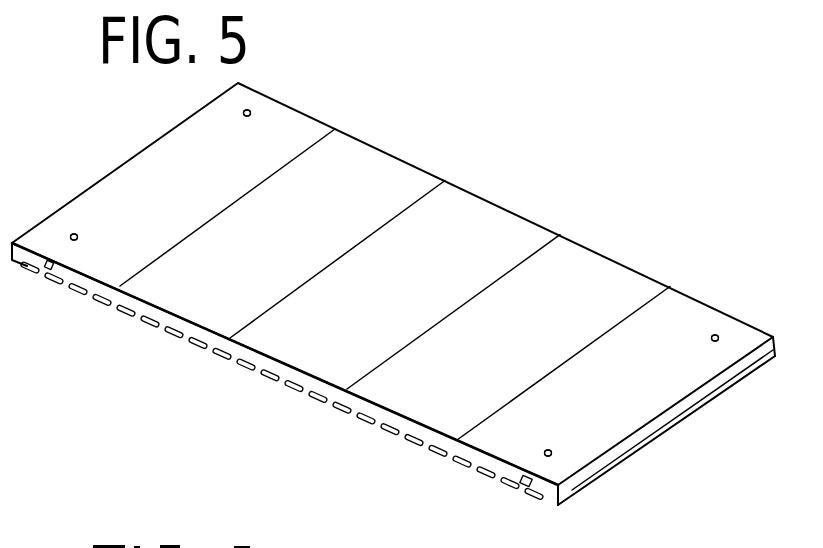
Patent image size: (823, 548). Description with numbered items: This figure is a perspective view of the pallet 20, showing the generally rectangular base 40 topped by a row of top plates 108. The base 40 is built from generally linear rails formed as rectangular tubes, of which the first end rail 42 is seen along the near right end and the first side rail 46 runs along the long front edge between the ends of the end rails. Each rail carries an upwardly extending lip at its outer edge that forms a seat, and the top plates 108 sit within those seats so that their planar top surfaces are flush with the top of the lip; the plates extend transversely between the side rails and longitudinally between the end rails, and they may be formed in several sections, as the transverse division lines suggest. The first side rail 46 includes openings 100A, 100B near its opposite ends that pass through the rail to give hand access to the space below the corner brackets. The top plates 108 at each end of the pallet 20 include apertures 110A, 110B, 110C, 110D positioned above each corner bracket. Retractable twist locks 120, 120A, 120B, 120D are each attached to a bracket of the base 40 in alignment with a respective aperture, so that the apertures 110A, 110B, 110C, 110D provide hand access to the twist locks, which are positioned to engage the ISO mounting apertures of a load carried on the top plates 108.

The pallet 20 is at (586, 170).
The top plates 108 is at (278, 115).
The first side rail 46 is at (358, 402).
The base 40 is at (647, 448).
The first end rail 42 is at (692, 407).
The opening 100A is at (537, 490).
The opening 100B is at (57, 269).
The aperture 110A is at (552, 454).
The aperture 110B is at (78, 240).
The aperture 110C is at (712, 338).
The aperture 110D is at (243, 113).
The retractable twist lock 120 is at (718, 336).
The retractable twist lock 120A is at (549, 450).
The retractable twist lock 120B is at (75, 234).
The retractable twist lock 120D is at (246, 117).